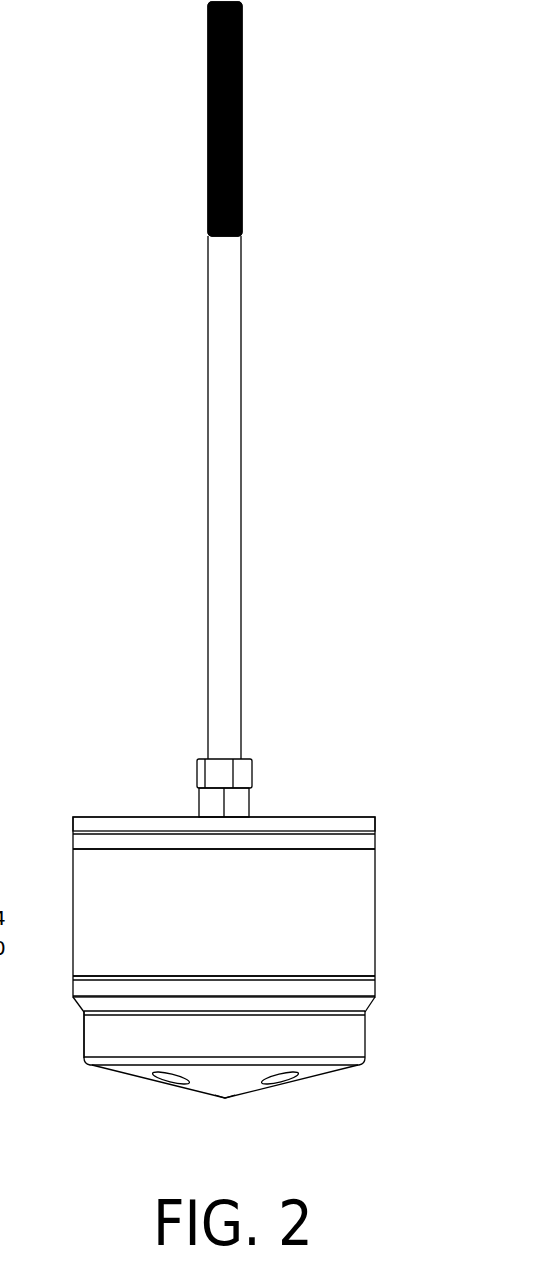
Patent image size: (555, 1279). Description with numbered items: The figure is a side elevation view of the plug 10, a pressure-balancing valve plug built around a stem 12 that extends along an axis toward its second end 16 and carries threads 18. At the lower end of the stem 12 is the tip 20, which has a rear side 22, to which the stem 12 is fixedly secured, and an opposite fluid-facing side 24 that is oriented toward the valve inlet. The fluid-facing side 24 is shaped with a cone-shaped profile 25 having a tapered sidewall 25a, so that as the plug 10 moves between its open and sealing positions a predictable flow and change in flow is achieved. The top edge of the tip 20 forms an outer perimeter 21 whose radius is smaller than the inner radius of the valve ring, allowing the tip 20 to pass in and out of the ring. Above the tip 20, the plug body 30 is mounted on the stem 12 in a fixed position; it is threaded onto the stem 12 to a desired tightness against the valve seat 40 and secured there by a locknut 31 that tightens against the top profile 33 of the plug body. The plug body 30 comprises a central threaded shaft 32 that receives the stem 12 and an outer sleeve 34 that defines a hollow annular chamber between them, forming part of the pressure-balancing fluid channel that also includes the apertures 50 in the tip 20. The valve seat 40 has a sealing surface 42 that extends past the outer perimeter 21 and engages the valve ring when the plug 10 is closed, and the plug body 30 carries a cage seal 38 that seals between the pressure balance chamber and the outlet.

The plug 10 is at (128, 723).
The stem 12 is at (225, 519).
The second end 16 is at (208, 137).
The threads 18 is at (208, 47).
The tip 20 is at (345, 1047).
The outer perimeter 21 is at (82, 1012).
The rear side 22 is at (340, 1014).
The fluid-facing side 24 is at (257, 1085).
The cone-shaped profile 25 is at (233, 1097).
The tapered sidewall 25a is at (85, 1040).
The plug body 30 is at (342, 958).
The locknut 31 is at (255, 765).
The central threaded shaft 32 is at (325, 817).
The top profile 33 is at (252, 805).
The outer sleeve 34 is at (345, 875).
The cage seal 38 is at (367, 841).
The valve seat 40 is at (125, 988).
The sealing surface 42 is at (118, 1003).
The apertures 50 is at (297, 1078).